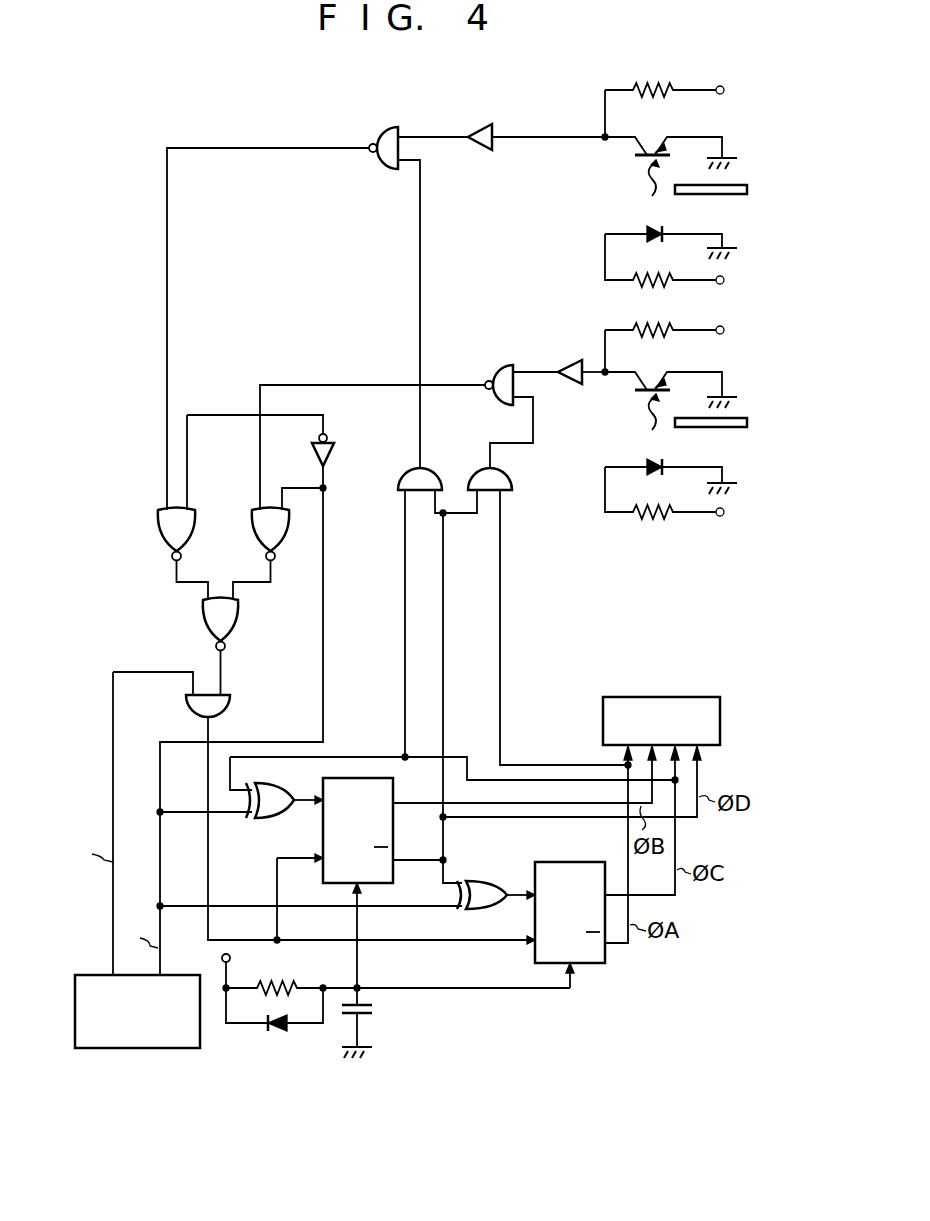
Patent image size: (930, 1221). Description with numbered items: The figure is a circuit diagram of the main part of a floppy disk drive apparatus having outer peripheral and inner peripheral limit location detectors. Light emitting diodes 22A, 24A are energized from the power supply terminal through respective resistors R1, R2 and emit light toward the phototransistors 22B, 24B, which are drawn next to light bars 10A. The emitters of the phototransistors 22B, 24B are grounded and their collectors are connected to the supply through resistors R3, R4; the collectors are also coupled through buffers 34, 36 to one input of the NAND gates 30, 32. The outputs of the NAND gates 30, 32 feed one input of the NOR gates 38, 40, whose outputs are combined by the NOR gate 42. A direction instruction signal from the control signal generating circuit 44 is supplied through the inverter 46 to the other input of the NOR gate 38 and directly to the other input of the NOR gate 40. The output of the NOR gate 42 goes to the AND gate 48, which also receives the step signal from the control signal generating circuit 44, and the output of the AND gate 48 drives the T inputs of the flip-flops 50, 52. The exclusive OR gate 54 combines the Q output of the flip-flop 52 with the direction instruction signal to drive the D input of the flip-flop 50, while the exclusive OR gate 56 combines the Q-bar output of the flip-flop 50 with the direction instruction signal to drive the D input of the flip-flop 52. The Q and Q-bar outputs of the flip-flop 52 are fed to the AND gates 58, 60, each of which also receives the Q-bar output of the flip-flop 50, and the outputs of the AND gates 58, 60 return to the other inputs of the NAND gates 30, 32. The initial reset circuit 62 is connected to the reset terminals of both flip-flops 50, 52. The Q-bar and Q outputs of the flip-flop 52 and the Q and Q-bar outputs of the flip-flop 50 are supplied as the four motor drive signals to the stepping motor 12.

The light source bar 10A is at (742, 196).
The stepping motor 12 is at (632, 696).
The light emitting diode 22A is at (647, 466).
The phototransistor 22B is at (658, 390).
The light emitting diode 24A is at (647, 232).
The phototransistor 24B is at (656, 150).
The NAND gate 30 is at (381, 171).
The NAND gate 32 is at (500, 376).
The buffer 34 is at (480, 152).
The buffer 36 is at (570, 386).
The NOR gate 38 is at (189, 550).
The NOR gate 40 is at (275, 550).
The NOR gate 42 is at (234, 632).
The control signal generating circuit 44 is at (105, 980).
The inverter 46 is at (334, 456).
The AND gate 48 is at (226, 706).
The flip-flop 50 is at (396, 792).
The flip-flop 52 is at (598, 965).
The exclusive OR gate 54 is at (264, 796).
The exclusive OR gate 56 is at (478, 889).
The AND gate 58 is at (428, 480).
The AND gate 60 is at (501, 486).
The initial reset circuit 62 is at (280, 1033).
The resistor R1 is at (646, 513).
The resistor R2 is at (634, 280).
The resistor R3 is at (638, 326).
The resistor R4 is at (652, 84).